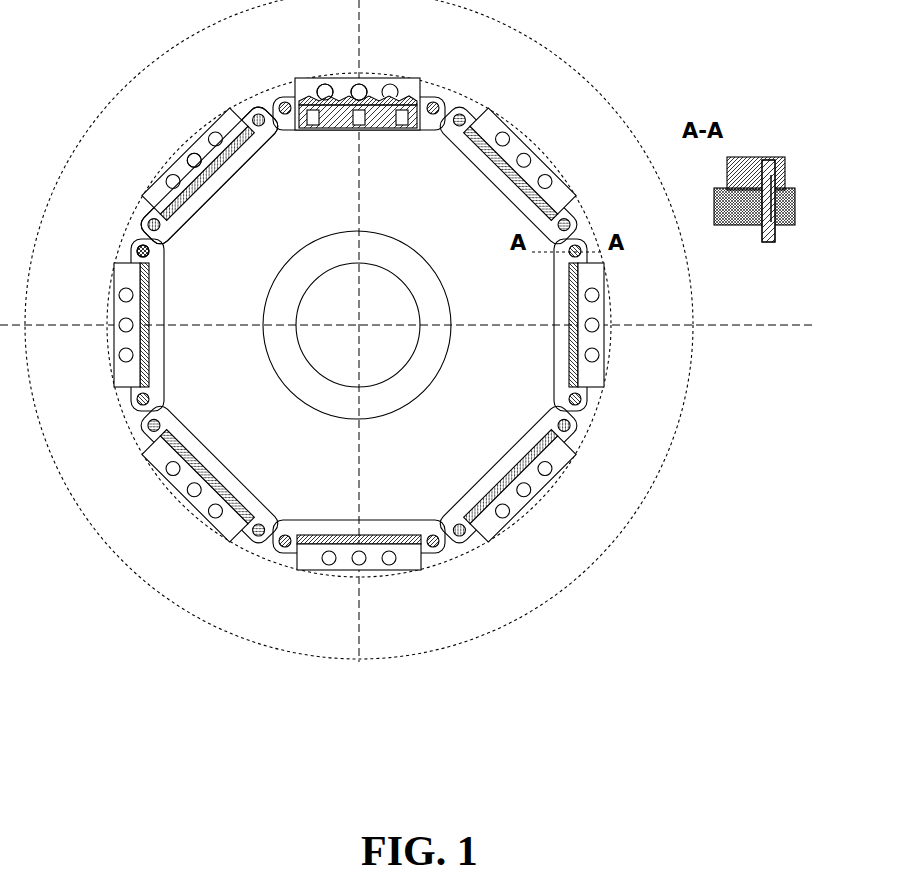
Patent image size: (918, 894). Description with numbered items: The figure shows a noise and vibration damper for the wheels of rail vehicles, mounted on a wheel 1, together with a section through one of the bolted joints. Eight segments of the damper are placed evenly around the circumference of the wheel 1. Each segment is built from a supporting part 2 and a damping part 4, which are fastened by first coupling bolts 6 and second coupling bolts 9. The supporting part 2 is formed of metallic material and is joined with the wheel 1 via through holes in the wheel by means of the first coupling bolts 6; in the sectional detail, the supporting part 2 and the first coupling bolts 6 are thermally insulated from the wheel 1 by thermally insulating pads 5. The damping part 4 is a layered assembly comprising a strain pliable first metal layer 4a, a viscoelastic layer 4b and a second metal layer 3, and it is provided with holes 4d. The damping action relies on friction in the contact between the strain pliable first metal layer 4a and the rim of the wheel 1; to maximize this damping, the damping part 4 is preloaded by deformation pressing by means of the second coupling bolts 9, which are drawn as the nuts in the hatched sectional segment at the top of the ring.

The wheel 1 is at (508, 72).
The supporting part 2 is at (218, 187).
The second metal layer 3 is at (356, 119).
The damping part 4 is at (233, 123).
The strain pliable first metal layer 4a is at (315, 78).
The viscoelastic layer 4b is at (370, 80).
The holes 4d is at (187, 161).
The thermally insulating pads 5 is at (763, 223).
The first coupling bolts 6 is at (147, 247).
The second coupling bolts 9 is at (330, 135).